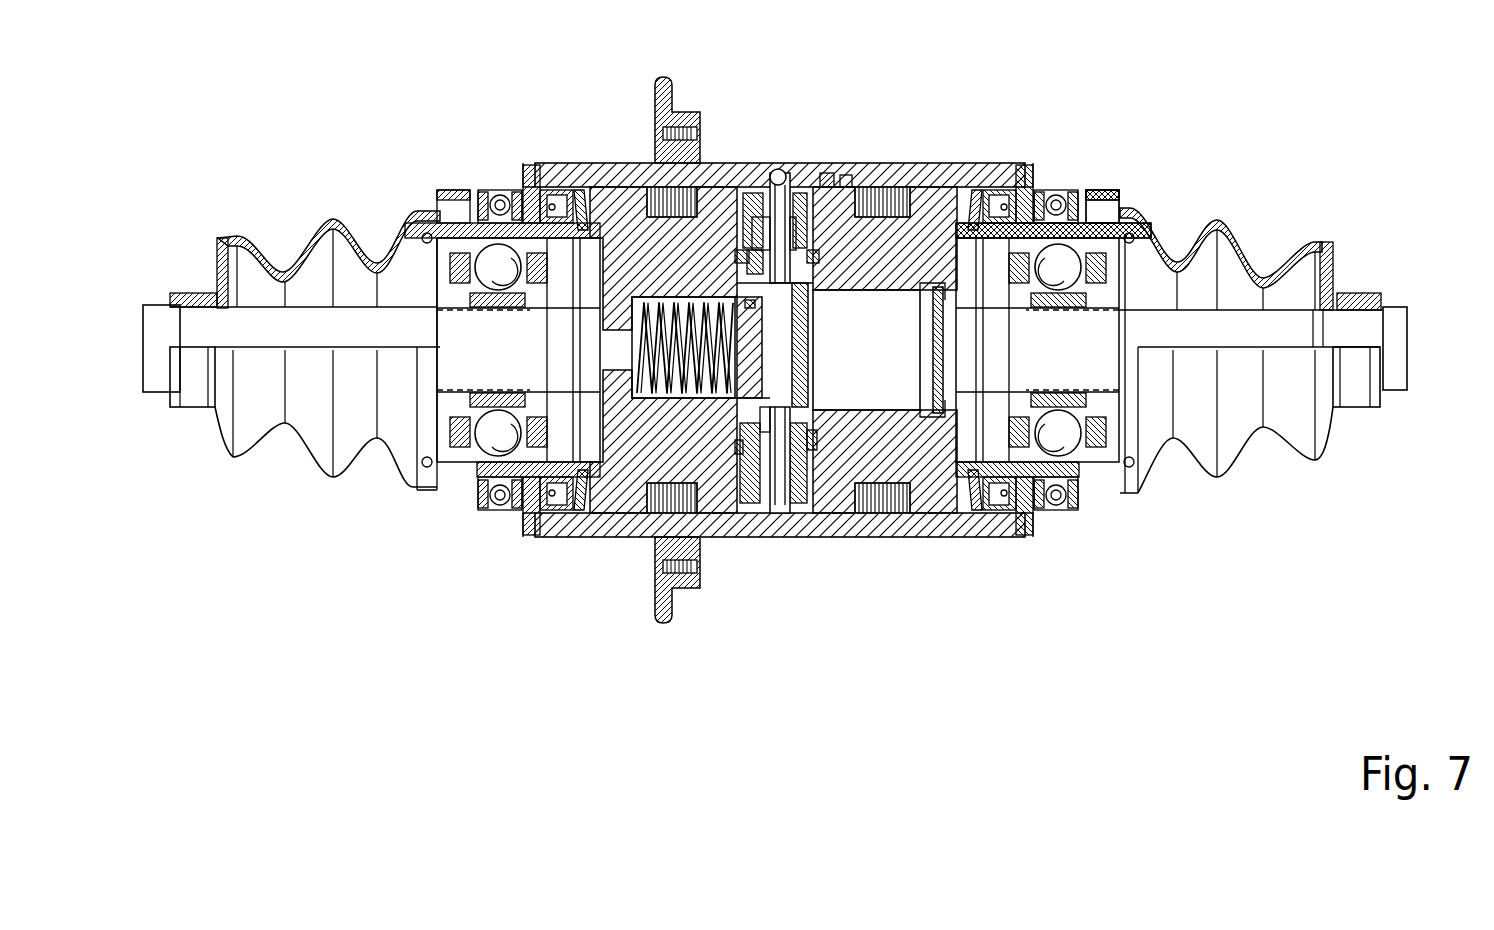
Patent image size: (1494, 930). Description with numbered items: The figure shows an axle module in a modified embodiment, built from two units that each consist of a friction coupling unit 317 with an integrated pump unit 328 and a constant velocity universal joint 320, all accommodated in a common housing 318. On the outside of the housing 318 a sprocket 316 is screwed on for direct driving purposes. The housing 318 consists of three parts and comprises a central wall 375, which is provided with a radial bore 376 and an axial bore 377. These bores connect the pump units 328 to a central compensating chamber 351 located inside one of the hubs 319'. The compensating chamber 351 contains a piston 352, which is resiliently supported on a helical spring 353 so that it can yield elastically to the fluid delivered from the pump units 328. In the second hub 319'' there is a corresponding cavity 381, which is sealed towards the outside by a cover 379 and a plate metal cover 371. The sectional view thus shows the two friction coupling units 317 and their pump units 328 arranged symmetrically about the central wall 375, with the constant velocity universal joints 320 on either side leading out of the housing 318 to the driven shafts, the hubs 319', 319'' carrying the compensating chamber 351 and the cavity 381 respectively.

The sprocket 316 is at (665, 107).
The friction coupling units 317 is at (884, 153).
The housing 318 is at (838, 425).
The hub 319' is at (624, 207).
The hub 319'' is at (899, 299).
The constant velocity universal joints 320 is at (1079, 183).
The pump units 328 is at (811, 156).
The central compensating chamber 351 is at (773, 345).
The piston 352 is at (745, 375).
The helical spring 353 is at (650, 397).
The plate metal cover 371 is at (940, 410).
The central wall 375 is at (787, 470).
The radial bore 376 is at (793, 195).
The axial bore 377 is at (767, 233).
The cover 379 is at (832, 410).
The cavity 381 is at (885, 380).